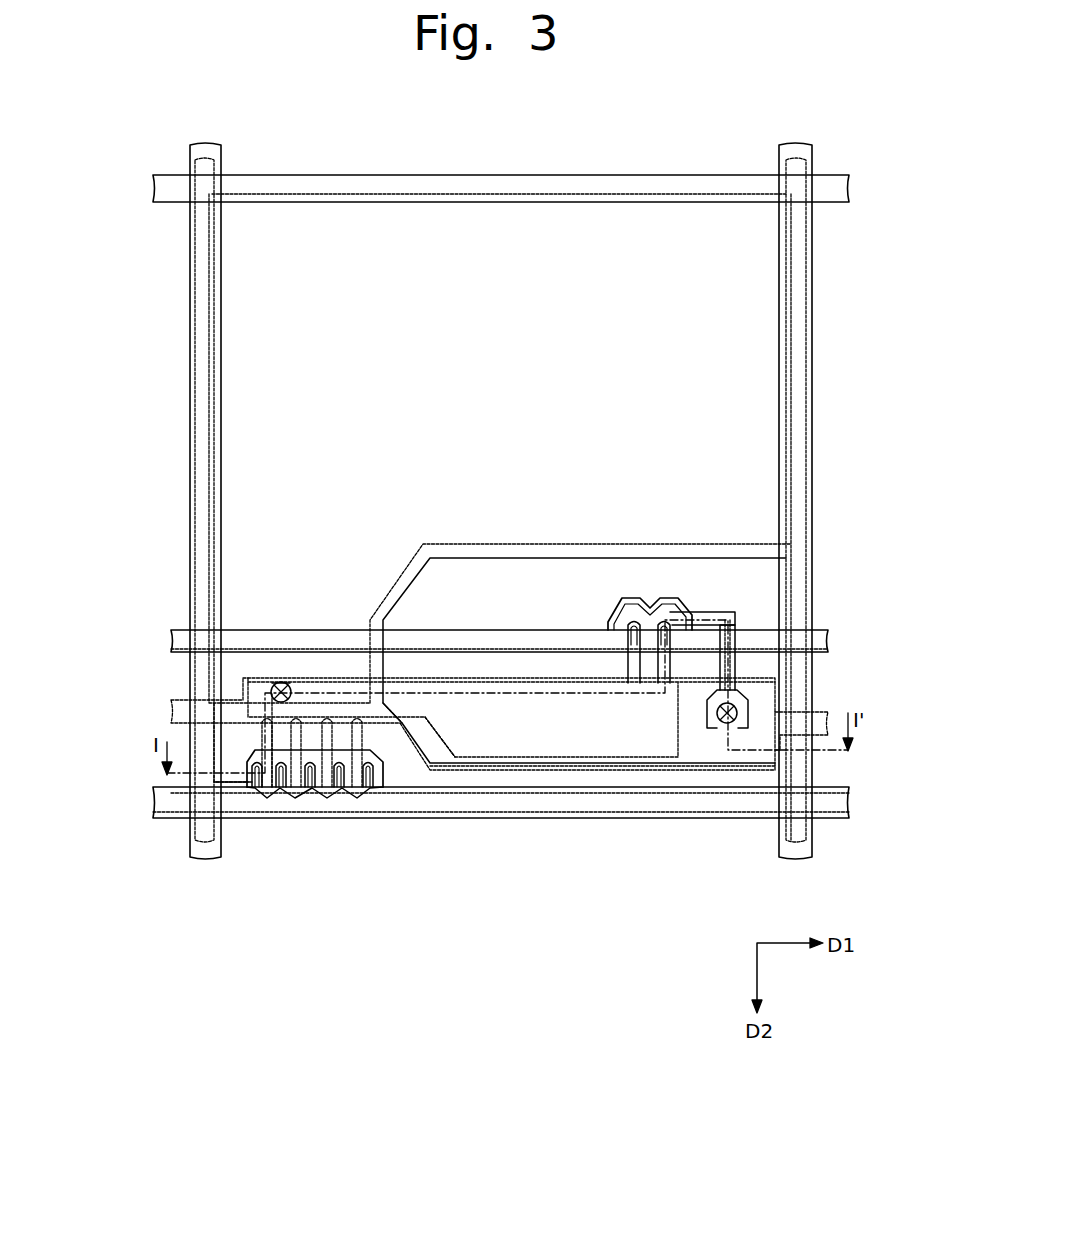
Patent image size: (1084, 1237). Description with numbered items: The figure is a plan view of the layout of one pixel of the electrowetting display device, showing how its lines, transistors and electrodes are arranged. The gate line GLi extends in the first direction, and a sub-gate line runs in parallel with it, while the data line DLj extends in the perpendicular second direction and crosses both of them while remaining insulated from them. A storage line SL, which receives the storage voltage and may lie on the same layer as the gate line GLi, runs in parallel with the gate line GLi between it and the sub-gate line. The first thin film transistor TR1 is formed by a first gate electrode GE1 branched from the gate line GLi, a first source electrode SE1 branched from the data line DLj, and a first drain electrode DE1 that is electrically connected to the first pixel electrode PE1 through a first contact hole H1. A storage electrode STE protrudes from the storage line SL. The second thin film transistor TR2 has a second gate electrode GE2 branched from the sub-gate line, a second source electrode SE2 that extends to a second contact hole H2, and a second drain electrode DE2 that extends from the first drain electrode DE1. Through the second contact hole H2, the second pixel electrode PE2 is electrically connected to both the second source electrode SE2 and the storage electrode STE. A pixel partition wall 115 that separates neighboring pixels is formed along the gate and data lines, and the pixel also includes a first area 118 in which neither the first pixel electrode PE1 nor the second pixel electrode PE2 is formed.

The pixel partition wall 115 is at (190, 254).
The data line DLj is at (205, 333).
The first pixel electrode PE1 is at (210, 396).
The second pixel electrode PE2 is at (790, 598).
The gate line GLi is at (178, 805).
The storage line SL is at (178, 710).
The storage electrode STE is at (690, 770).
The first contact hole H1 is at (272, 686).
The second contact hole H2 is at (750, 712).
The first thin film transistor TR1 is at (367, 890).
The first gate electrode GE1 is at (256, 792).
The first source electrode SE1 is at (295, 792).
The first drain electrode DE1 is at (327, 782).
The second thin film transistor TR2 is at (708, 478).
The second gate electrode GE2 is at (615, 600).
The second source electrode SE2 is at (637, 610).
The second drain electrode DE2 is at (660, 600).
The first area 118 is at (405, 772).